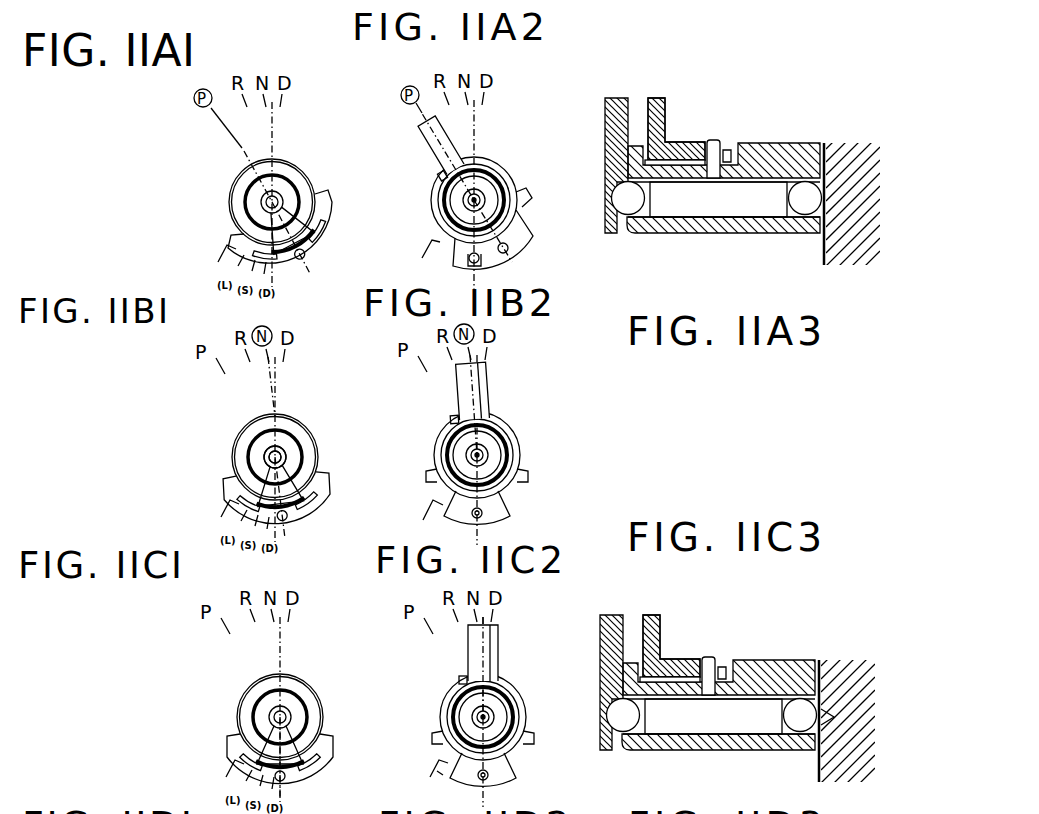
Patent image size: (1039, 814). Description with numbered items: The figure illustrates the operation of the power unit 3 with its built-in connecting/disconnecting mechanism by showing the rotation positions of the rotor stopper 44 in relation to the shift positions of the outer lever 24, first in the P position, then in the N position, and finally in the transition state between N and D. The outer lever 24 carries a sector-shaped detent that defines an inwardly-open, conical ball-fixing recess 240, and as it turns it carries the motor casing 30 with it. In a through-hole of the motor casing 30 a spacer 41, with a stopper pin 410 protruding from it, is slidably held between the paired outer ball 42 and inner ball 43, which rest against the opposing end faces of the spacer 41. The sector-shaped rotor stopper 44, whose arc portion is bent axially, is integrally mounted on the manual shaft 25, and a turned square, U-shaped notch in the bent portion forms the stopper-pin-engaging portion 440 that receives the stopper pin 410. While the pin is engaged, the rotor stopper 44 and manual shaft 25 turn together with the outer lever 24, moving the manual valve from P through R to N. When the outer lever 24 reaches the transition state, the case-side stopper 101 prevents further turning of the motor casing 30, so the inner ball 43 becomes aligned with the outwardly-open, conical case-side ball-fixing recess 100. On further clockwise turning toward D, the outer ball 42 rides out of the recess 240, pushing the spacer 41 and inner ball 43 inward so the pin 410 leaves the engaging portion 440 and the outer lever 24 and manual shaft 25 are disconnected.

In FIG. 11A2, the power unit 3 is at (475, 183).
In FIG. 11A2, the outer lever 24 is at (428, 159).
In FIG. 11A3, the outer lever 24 is at (588, 165).
In FIG. 11B2, the outer lever 24 is at (443, 405).
In FIG. 11C2, the outer lever 24 is at (455, 667).
In FIG. 11C3, the outer lever 24 is at (585, 682).
In FIG. 11B1, the manual shaft 25 is at (311, 445).
In FIG. 11B2, the motor casing 30 is at (495, 445).
In FIG. 11C2, the motor casing 30 is at (497, 705).
In FIG. 11A3, the spacer 41 is at (724, 227).
In FIG. 11C3, the spacer 41 is at (719, 748).
In FIG. 11A3, the outer ball 42 is at (641, 227).
In FIG. 11C3, the outer ball 42 is at (631, 748).
In FIG. 11A3, the inner ball 43 is at (797, 227).
In FIG. 11C3, the inner ball 43 is at (791, 750).
In FIG. 11A1, the rotor stopper 44 is at (295, 218).
In FIG. 11A3, the rotor stopper 44 is at (677, 121).
In FIG. 11B1, the rotor stopper 44 is at (293, 498).
In FIG. 11C1, the rotor stopper 44 is at (302, 740).
In FIG. 11C3, the rotor stopper 44 is at (670, 630).
In FIG. 11C3, the case-side ball-fixing recess 100 is at (841, 713).
In FIG. 11C2, the case-side stopper 101 is at (405, 755).
In FIG. 11A3, the ball-fixing recess 240 is at (690, 244).
In FIG. 11C3, the ball-fixing recess 240 is at (677, 744).
In FIG. 11A3, the stopper pin 410 is at (724, 141).
In FIG. 11C3, the stopper pin 410 is at (719, 660).
In FIG. 11A3, the stopper-pin-engaging portion 440 is at (717, 141).
In FIG. 11C3, the stopper-pin-engaging portion 440 is at (700, 655).